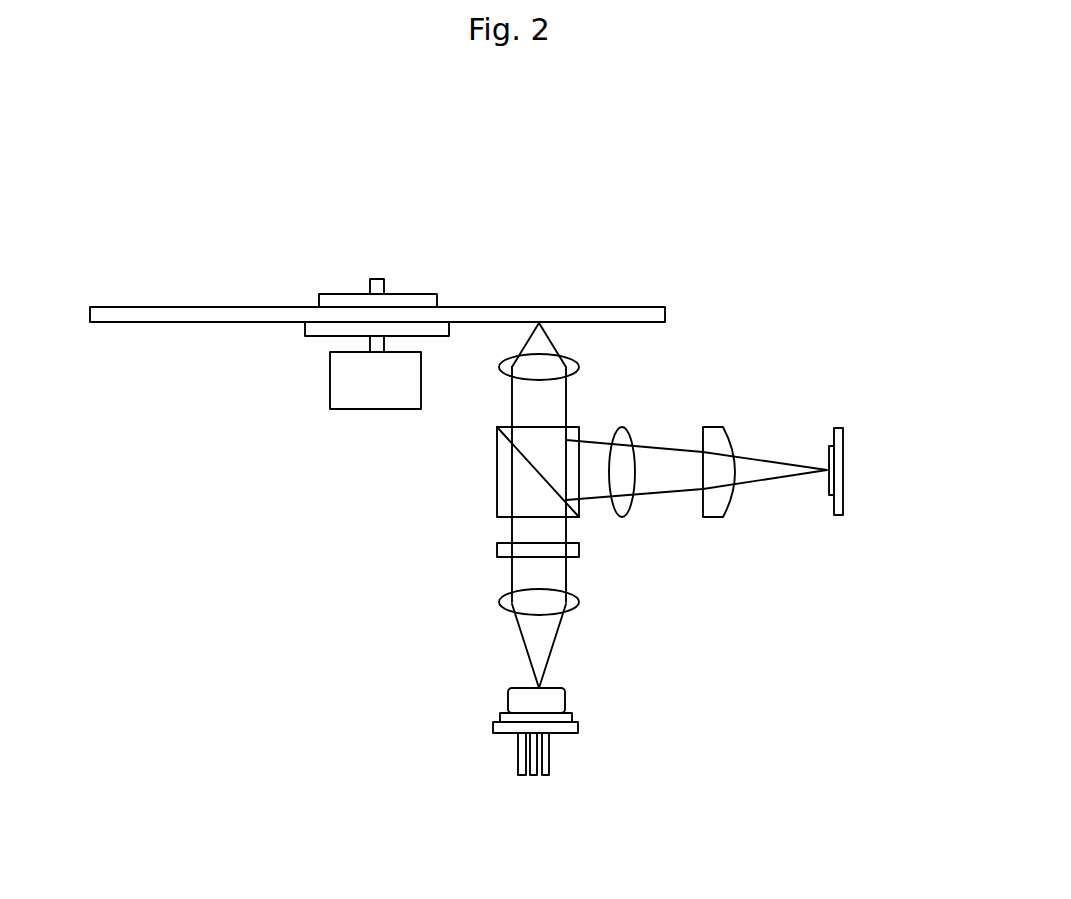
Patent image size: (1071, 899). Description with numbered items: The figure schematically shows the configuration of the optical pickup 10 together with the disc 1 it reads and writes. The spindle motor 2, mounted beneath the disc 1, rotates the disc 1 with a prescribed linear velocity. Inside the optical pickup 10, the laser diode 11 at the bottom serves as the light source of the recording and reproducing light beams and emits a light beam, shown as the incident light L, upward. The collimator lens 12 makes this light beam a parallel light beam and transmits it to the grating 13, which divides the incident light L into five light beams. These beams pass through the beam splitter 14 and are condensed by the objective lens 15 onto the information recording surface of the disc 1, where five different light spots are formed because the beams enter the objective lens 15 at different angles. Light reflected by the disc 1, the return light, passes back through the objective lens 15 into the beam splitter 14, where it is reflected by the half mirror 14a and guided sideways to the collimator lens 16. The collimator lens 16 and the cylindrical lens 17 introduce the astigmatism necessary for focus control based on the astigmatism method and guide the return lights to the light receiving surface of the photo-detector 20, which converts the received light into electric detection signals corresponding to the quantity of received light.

The disc 1 is at (517, 312).
The spindle motor 2 is at (350, 402).
The optical pickup 10 is at (640, 693).
The laser diode 11 is at (506, 701).
The collimator lens 12 is at (498, 602).
The grating 13 is at (497, 548).
The beam splitter 14 is at (580, 513).
The half mirror 14a is at (500, 427).
The objective lens 15 is at (579, 367).
The collimator lens 16 is at (628, 508).
The cylindrical lens 17 is at (722, 427).
The photo-detector 20 is at (843, 468).
The incident light L is at (560, 631).